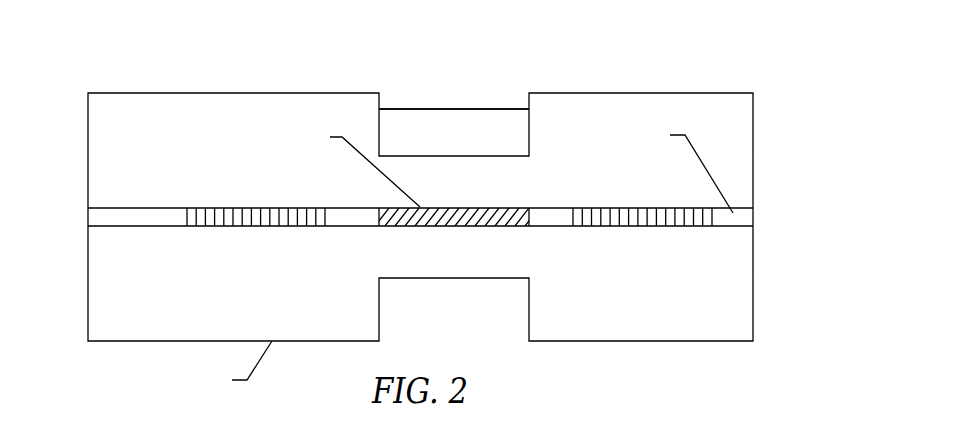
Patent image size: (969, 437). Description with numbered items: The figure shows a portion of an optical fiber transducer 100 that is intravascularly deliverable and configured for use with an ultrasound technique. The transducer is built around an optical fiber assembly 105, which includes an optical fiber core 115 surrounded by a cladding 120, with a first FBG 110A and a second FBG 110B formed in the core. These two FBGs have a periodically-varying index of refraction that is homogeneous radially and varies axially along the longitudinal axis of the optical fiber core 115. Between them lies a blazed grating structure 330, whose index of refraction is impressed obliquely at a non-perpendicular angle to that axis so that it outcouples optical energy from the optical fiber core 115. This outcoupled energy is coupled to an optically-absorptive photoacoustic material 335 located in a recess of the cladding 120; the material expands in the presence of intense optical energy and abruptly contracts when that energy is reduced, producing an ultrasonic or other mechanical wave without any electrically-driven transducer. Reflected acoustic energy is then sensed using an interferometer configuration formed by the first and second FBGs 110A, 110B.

The optical fiber transducer 100 is at (702, 64).
The optical fiber assembly 105 is at (72, 93).
The first FBG 110A is at (240, 207).
The second FBG 110B is at (642, 207).
The optical fiber core 115 is at (743, 220).
The cladding 120 is at (743, 150).
The blazed grating structure 330 is at (452, 227).
The optically-absorptive photoacoustic material 335 is at (455, 107).